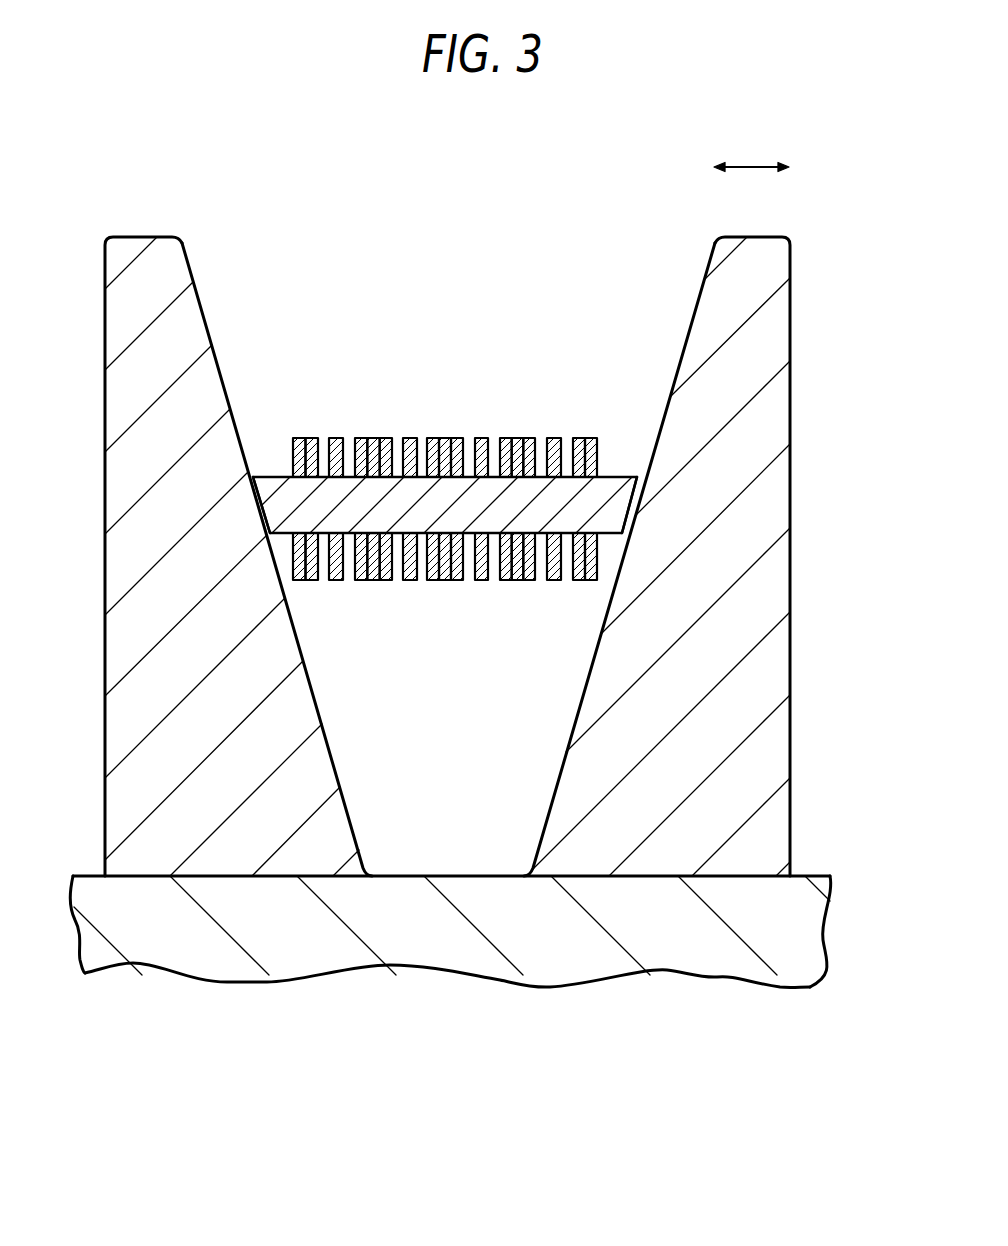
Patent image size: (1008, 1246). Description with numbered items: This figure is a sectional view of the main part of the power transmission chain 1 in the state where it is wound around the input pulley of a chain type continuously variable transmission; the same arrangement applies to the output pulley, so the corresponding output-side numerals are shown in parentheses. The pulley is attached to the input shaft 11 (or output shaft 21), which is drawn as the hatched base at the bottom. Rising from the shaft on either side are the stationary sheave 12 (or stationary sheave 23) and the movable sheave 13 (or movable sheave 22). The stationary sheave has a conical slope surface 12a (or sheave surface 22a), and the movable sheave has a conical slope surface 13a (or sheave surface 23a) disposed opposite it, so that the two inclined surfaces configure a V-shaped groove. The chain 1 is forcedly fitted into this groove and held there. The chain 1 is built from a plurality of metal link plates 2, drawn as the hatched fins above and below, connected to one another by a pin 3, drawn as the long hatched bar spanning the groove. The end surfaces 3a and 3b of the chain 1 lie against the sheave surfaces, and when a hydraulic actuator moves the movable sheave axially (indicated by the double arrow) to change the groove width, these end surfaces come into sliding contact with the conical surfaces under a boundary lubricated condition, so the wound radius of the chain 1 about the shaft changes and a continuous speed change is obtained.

The power transmission chain 1 is at (547, 478).
The link plate 2 is at (312, 438).
The pin 3 is at (547, 523).
The end surface 3a is at (272, 533).
The end surface 3b is at (637, 505).
The input shaft 11 is at (680, 947).
The output shaft 21 is at (450, 967).
The stationary sheave 12 is at (225, 536).
The stationary sheave 23 is at (225, 536).
The slope surface 12a is at (205, 317).
The sheave surface 22a is at (277, 559).
The movable sheave 13 is at (708, 530).
The movable sheave 22 is at (708, 530).
The slope surface 13a is at (690, 323).
The sheave surface 23a is at (619, 559).